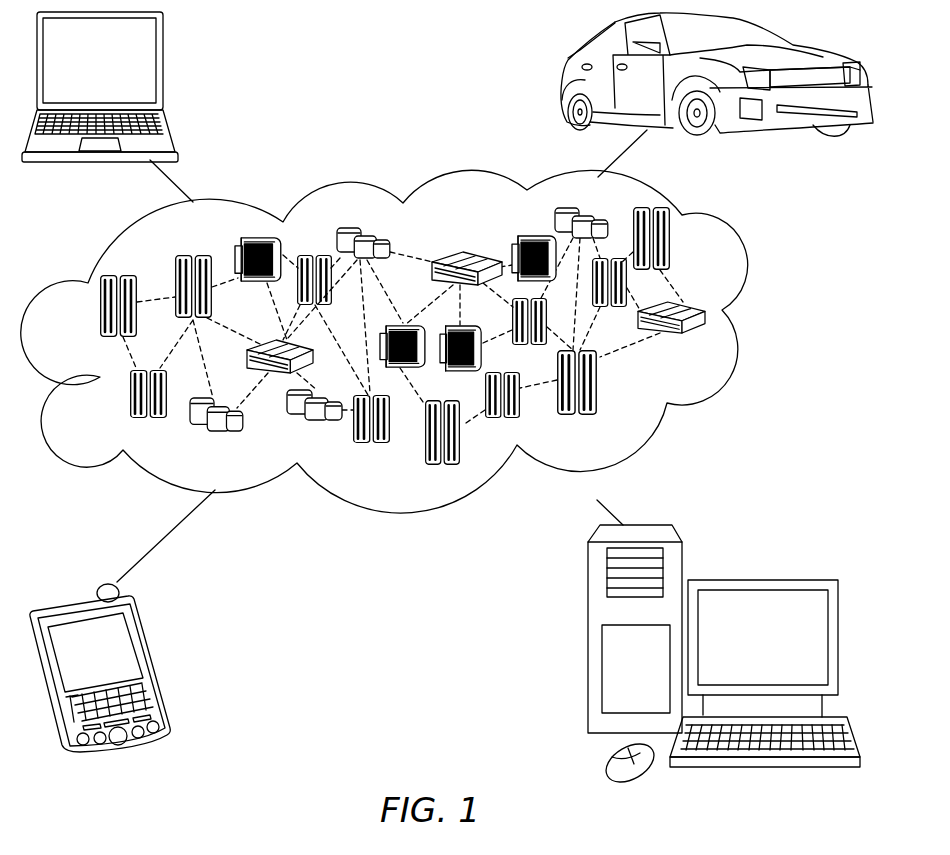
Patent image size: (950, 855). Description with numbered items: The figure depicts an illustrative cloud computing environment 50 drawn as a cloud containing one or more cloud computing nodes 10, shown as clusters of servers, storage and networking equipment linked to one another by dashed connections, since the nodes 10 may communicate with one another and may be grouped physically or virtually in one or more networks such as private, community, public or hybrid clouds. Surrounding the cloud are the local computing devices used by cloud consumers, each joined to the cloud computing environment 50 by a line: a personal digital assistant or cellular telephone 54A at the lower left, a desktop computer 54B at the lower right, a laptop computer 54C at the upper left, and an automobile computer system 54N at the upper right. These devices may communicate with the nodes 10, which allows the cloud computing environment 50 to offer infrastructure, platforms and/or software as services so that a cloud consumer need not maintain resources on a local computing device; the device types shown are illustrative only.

The cloud computing node 10 is at (712, 343).
The cloud computing environment 50 is at (418, 341).
The personal digital assistant or cellular telephone 54A is at (152, 663).
The desktop computer 54B is at (761, 577).
The laptop computer 54C is at (163, 69).
The automobile computer system 54N is at (560, 83).